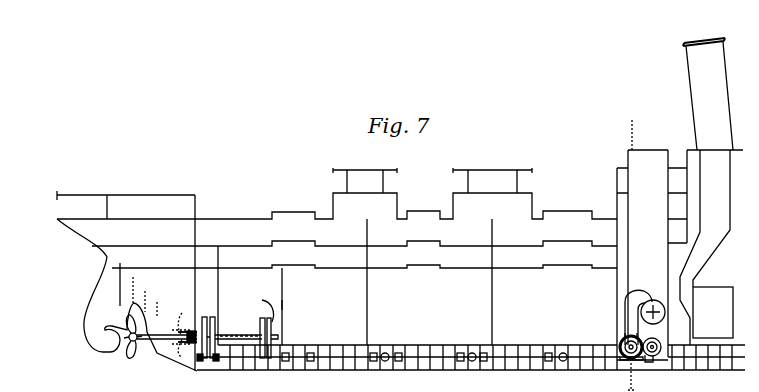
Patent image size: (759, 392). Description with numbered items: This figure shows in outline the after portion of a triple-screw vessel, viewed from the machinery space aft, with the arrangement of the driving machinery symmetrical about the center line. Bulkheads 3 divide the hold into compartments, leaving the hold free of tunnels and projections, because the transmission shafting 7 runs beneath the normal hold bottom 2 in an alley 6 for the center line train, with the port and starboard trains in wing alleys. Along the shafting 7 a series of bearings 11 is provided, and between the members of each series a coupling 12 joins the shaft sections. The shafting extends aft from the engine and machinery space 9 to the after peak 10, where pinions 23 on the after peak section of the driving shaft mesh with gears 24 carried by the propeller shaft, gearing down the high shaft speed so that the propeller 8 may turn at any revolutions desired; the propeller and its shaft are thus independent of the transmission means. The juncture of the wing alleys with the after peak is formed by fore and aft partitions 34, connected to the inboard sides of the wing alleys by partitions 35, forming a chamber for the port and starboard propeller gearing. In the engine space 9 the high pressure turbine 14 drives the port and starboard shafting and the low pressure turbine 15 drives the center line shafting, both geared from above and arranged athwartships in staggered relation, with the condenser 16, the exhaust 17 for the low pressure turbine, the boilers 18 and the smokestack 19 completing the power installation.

The normal hold or inner bottom 2 is at (438, 346).
The bulkheads 3 is at (195, 288).
The alley 6 is at (514, 365).
The shafting 7 is at (527, 355).
The propeller 8 is at (182, 342).
The engine and machinery space 9 is at (680, 251).
The after peak 10 is at (207, 300).
The bearings 11 is at (398, 353).
The coupling 12 is at (386, 362).
The high pressure turbine 14 is at (661, 346).
The low pressure turbine 15 is at (621, 340).
The condenser 16 is at (659, 300).
The exhaust for the low pressure turbine 17 is at (633, 298).
The boilers 18 is at (722, 295).
The smokestack 19 is at (713, 102).
The pinions 23 is at (211, 362).
The gears 24 is at (262, 322).
The fore and aft partitions 34 is at (274, 320).
The partitions 35 is at (284, 310).